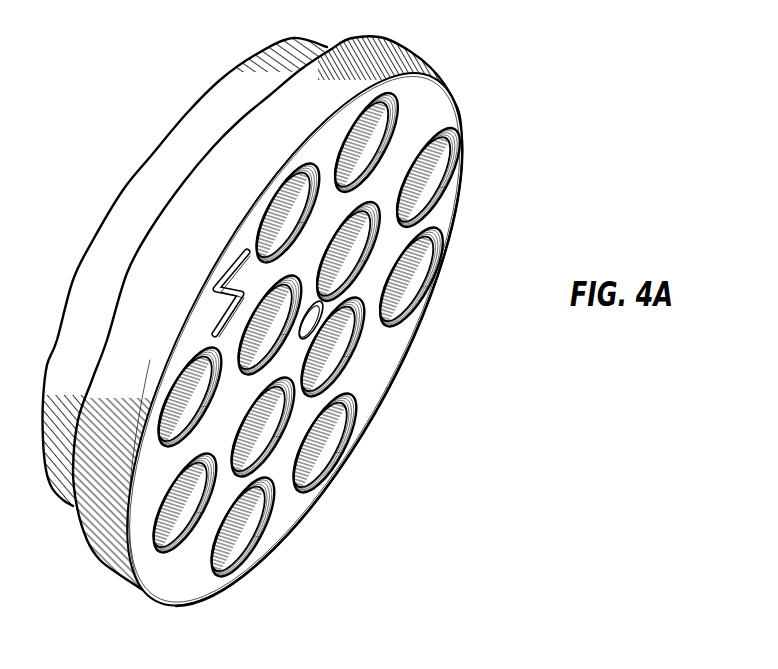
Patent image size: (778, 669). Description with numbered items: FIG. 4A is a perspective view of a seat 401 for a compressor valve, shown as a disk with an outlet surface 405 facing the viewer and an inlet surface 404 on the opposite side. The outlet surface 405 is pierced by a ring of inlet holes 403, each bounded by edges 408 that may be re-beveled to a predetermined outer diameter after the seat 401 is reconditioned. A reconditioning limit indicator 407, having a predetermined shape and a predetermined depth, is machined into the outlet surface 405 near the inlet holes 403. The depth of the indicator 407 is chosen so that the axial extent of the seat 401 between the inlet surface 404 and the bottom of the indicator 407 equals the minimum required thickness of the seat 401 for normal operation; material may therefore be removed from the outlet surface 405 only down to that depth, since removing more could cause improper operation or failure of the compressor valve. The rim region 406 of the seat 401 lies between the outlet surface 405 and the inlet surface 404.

The seat 401 is at (330, 329).
The inlet holes 403 is at (247, 433).
The inlet surface 404 is at (123, 197).
The outlet surface 405 is at (390, 342).
The side wall 406 is at (387, 57).
The reconditioning limit indicator 407 is at (233, 308).
The edges 408 is at (433, 273).